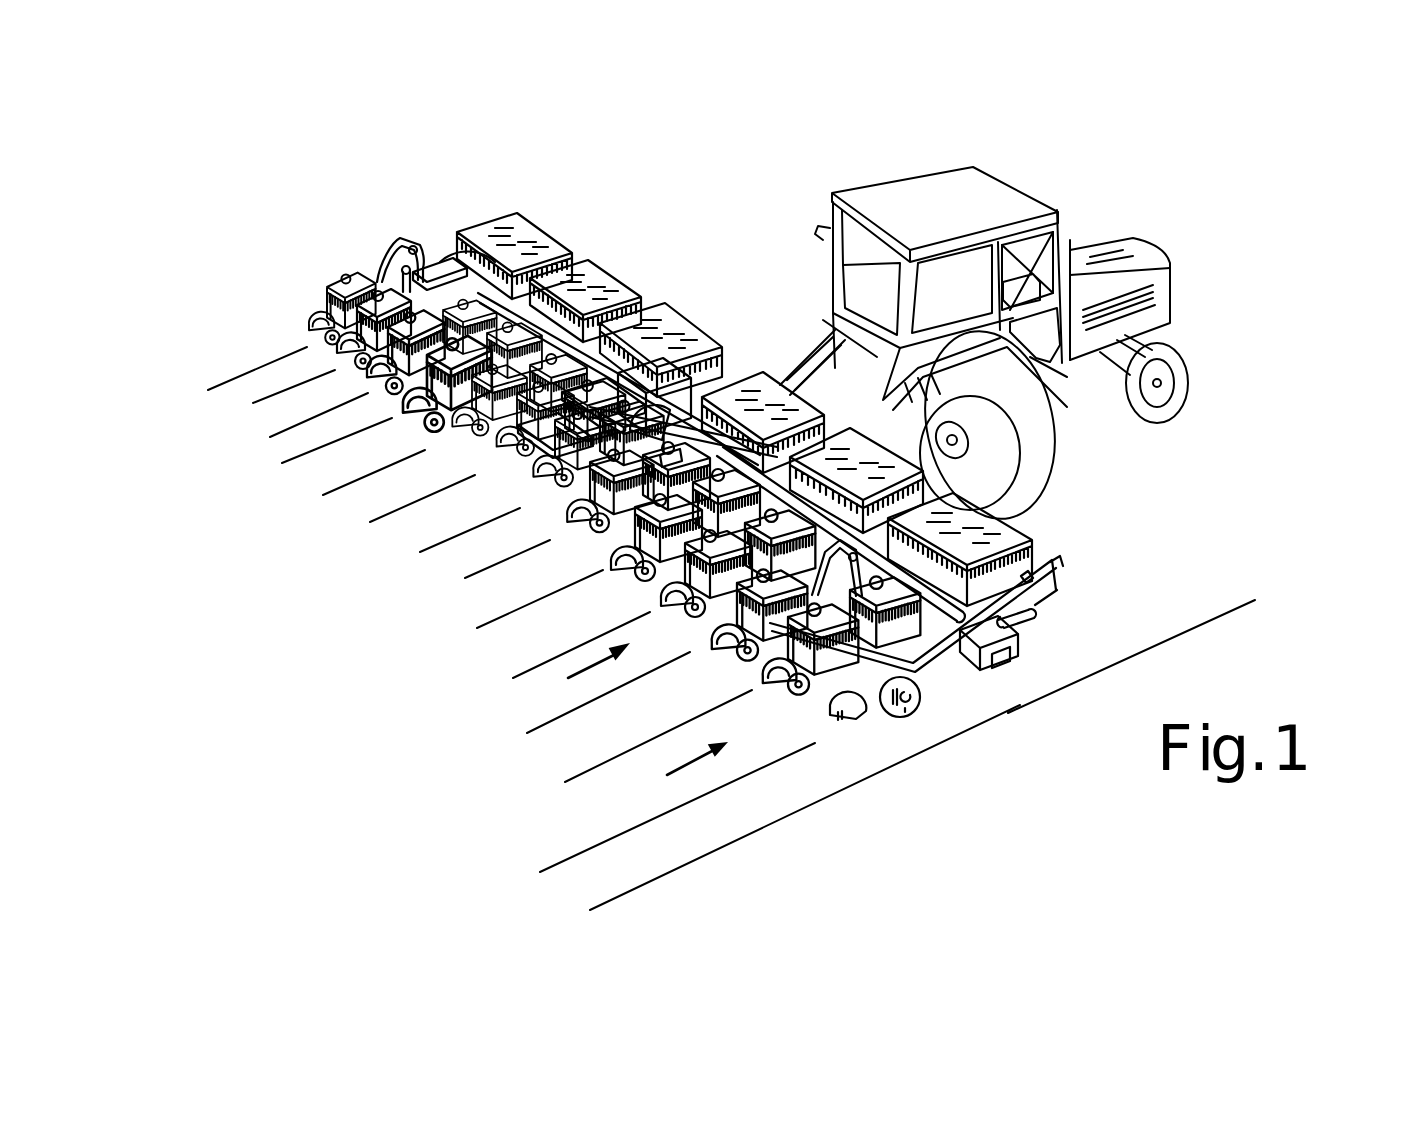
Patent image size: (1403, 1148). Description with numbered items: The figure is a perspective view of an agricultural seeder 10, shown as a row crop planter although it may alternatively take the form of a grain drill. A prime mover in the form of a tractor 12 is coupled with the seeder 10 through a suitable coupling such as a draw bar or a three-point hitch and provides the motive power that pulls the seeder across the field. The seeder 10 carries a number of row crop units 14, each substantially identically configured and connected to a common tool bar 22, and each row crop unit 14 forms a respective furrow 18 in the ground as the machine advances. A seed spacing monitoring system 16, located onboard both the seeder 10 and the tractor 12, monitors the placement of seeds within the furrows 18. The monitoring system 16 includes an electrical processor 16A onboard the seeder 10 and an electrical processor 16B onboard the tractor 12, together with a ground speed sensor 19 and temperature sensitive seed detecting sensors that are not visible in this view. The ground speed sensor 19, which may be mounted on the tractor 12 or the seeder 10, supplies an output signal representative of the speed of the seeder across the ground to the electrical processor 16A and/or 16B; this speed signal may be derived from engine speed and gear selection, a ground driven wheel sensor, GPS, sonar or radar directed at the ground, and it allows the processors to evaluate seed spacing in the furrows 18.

The agricultural seeder 10 is at (366, 170).
The tractor 12 is at (1280, 252).
The row crop units 14 is at (628, 721).
The seed spacing monitoring system 16 is at (691, 302).
The electrical processor onboard seeder 16A is at (650, 390).
The electrical processor onboard tractor 16B is at (1073, 248).
The furrows 18 is at (545, 729).
The ground speed sensor 19 is at (668, 385).
The common tool bar 22 is at (1005, 675).